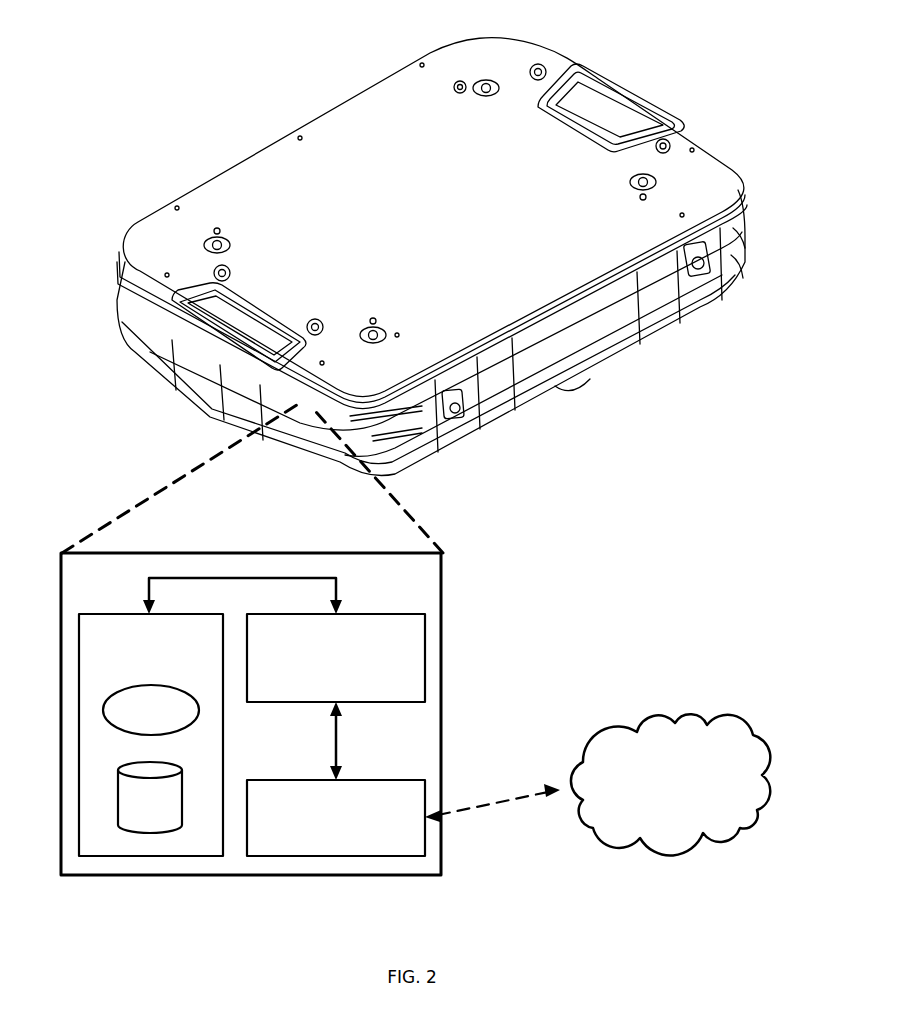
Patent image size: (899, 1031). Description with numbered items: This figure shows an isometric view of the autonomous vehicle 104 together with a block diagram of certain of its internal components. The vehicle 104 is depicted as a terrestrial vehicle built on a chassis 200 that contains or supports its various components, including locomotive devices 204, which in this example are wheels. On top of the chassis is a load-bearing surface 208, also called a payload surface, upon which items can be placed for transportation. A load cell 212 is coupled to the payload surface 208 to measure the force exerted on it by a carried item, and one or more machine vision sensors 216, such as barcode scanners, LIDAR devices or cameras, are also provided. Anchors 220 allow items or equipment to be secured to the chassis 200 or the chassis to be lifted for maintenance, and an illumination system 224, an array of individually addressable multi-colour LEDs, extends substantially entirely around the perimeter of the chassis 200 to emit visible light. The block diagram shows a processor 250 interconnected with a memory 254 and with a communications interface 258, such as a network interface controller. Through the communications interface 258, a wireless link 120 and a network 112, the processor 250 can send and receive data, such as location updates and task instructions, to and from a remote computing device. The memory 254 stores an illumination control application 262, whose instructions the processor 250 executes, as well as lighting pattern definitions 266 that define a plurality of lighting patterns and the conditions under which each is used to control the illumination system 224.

The autonomous vehicle 104 is at (177, 182).
The network 112 is at (646, 781).
The wireless link 120 is at (492, 791).
The chassis 200 is at (573, 250).
The locomotive devices 204 is at (570, 383).
The load-bearing surface 208 is at (444, 197).
The load cell 212 is at (492, 96).
The machine vision sensors 216 is at (230, 422).
The anchors 220 is at (671, 148).
The illumination system 224 is at (137, 275).
The processor 250 is at (320, 659).
The memory 254 is at (135, 644).
The communications interface 258 is at (320, 807).
The illumination control application 262 is at (135, 719).
The lighting pattern definitions 266 is at (134, 809).